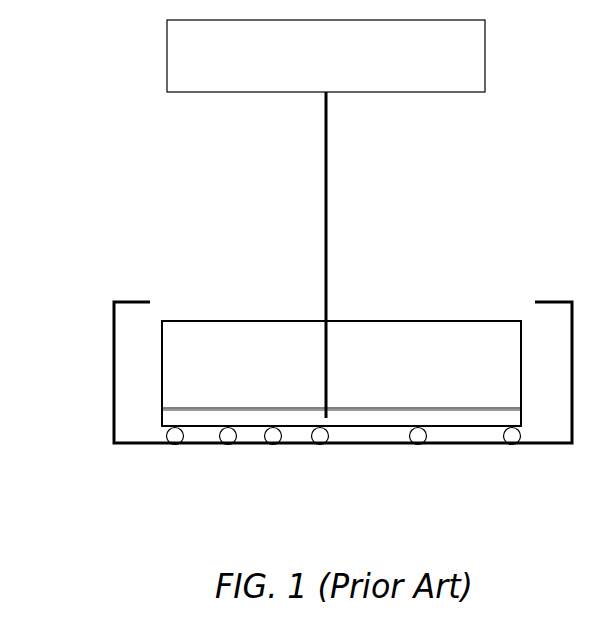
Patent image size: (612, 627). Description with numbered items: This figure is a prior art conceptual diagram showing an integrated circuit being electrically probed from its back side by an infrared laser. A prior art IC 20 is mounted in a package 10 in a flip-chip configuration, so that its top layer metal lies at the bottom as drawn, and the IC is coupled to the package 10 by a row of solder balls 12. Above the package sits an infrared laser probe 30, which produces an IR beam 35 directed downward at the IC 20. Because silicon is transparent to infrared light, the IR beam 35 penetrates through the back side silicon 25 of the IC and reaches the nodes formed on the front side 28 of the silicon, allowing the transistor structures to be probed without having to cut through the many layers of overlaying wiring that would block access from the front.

The package 10 is at (113, 390).
The solder balls 12 is at (270, 444).
The integrated circuit 20 is at (198, 318).
The back side silicon 25 is at (413, 348).
The front side 28 is at (467, 417).
The infrared laser probe 30 is at (404, 66).
The IR beam 35 is at (322, 250).